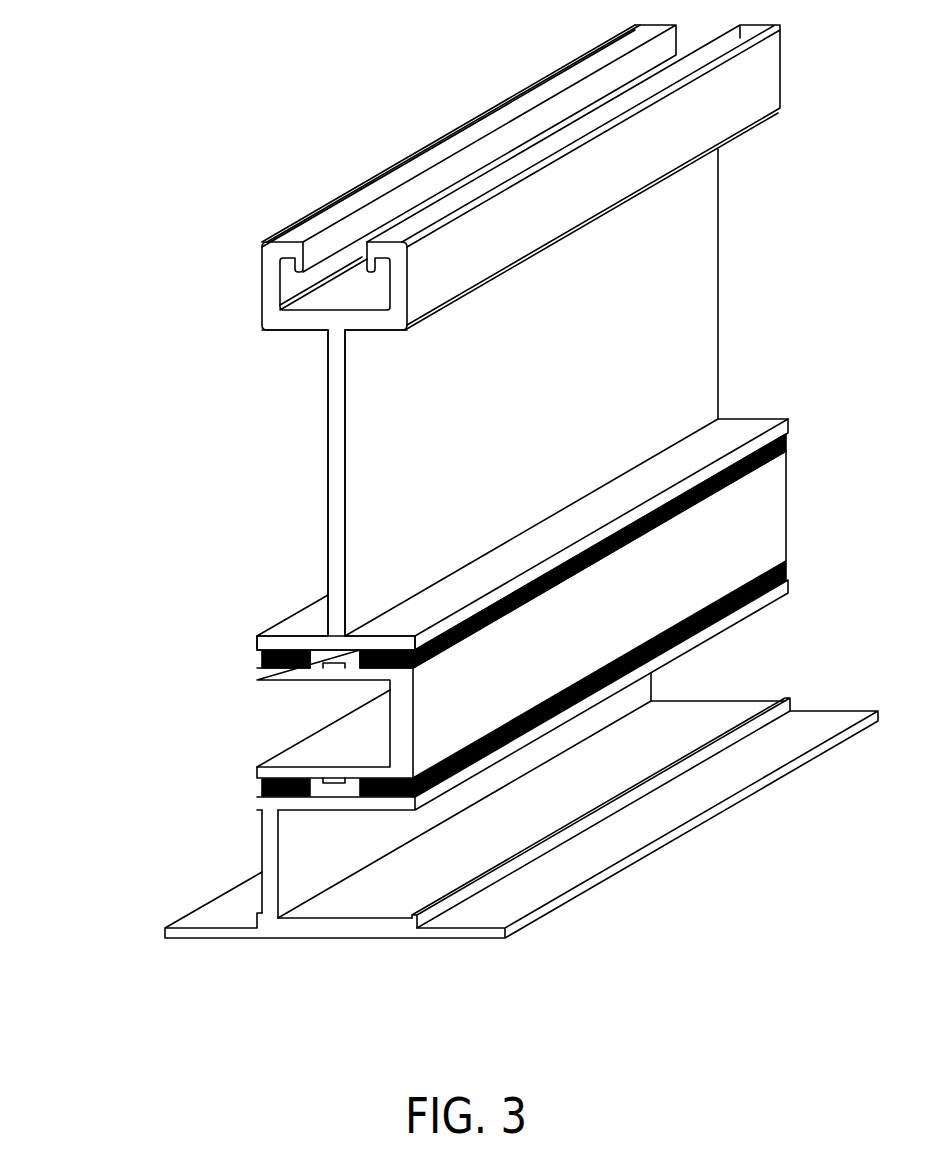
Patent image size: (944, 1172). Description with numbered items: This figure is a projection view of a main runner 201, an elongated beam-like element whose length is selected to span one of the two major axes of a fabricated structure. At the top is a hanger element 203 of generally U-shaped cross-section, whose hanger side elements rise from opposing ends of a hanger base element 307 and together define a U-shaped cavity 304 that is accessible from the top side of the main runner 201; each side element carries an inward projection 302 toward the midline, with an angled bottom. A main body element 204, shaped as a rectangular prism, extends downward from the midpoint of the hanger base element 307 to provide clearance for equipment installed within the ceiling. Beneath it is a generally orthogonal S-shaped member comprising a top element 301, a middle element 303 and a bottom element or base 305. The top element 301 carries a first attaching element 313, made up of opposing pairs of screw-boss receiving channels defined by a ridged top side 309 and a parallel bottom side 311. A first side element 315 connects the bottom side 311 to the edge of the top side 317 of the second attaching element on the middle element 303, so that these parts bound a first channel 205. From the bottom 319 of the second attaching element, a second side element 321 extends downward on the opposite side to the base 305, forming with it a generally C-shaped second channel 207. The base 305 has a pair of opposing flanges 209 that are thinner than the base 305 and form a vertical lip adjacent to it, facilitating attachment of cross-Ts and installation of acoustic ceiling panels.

The main runner 201 is at (148, 505).
The hanger element 203 is at (262, 294).
The inward projection 302 is at (272, 240).
The U-shaped cavity 304 is at (345, 262).
The hanger base element 307 is at (282, 334).
The main body element 204 is at (327, 438).
The top element 301 is at (263, 633).
The top side 309 is at (305, 628).
The first attaching element 313 is at (262, 658).
The bottom side 311 is at (300, 678).
The first channel 205 is at (303, 719).
The first side element 315 is at (444, 717).
The top side 317 is at (382, 752).
The bottom 319 is at (302, 806).
The middle element 303 is at (262, 801).
The second side element 321 is at (272, 862).
The second channel 207 is at (293, 877).
The bottom element 305 is at (320, 934).
The flanges 209 is at (192, 934).